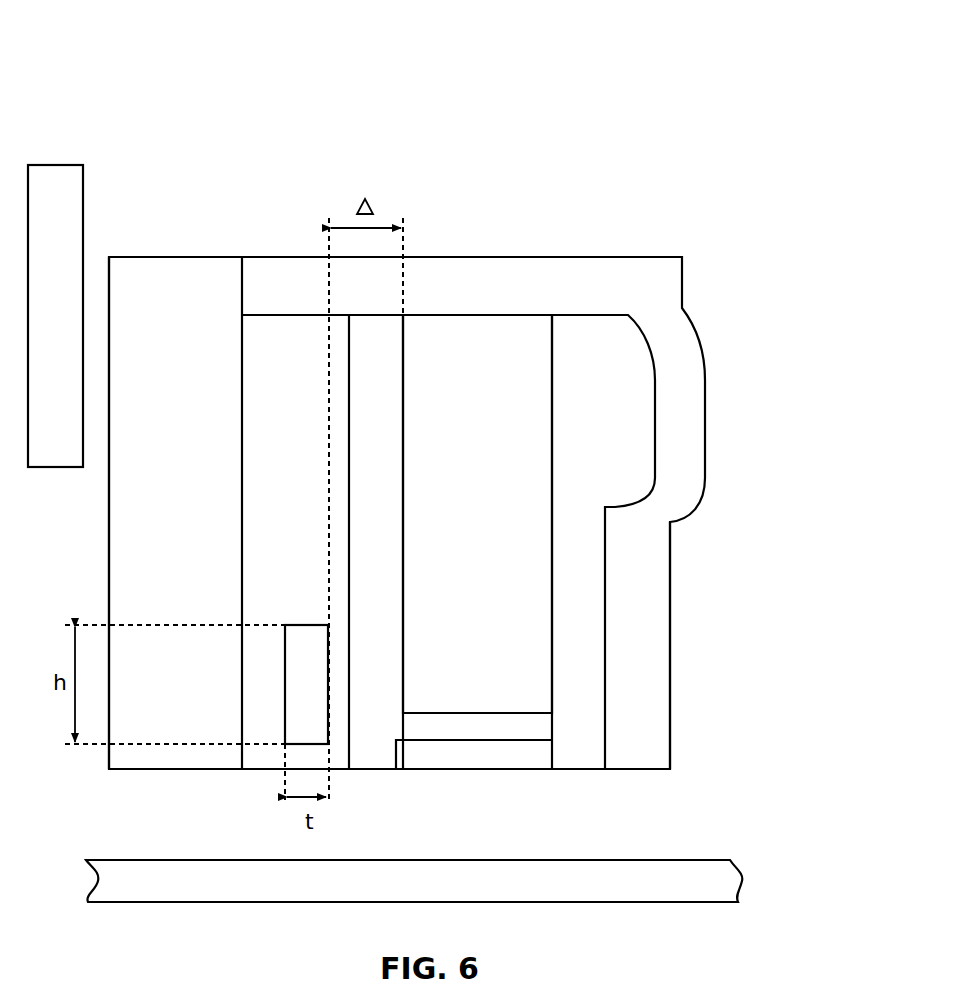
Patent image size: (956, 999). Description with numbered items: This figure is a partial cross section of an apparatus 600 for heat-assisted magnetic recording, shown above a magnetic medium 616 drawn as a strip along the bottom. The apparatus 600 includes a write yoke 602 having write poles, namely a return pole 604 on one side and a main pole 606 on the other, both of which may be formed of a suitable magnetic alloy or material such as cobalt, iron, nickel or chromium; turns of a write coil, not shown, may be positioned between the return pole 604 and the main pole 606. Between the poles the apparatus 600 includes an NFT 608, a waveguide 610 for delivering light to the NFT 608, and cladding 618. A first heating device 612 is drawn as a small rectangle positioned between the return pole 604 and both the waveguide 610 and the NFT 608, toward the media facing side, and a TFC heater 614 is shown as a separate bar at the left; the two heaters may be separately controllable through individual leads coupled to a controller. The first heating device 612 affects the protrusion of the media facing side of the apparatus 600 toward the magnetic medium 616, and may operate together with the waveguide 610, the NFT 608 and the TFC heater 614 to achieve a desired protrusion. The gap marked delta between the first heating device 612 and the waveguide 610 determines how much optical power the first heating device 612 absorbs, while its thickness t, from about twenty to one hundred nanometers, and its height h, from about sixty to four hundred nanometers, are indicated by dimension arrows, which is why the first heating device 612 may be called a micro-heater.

The apparatus 600 is at (158, 74).
The write yoke 602 is at (485, 226).
The return pole 604 is at (175, 513).
The main pole 606 is at (456, 542).
The NFT 608 is at (474, 754).
The waveguide 610 is at (477, 542).
The first heating device 612 is at (286, 712).
The TFC heater 614 is at (55, 316).
The magnetic medium 616 is at (414, 881).
The cladding 618 is at (376, 542).